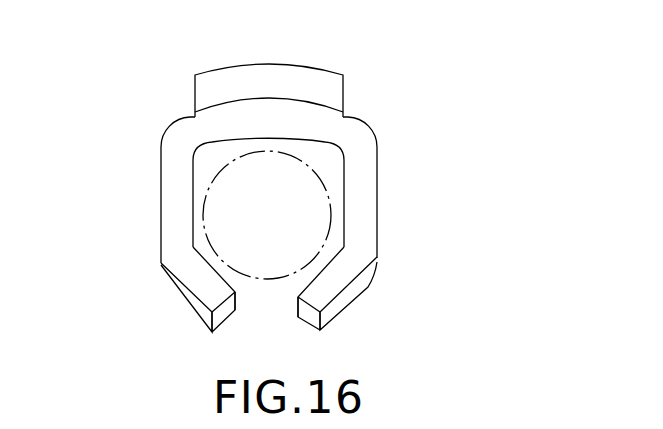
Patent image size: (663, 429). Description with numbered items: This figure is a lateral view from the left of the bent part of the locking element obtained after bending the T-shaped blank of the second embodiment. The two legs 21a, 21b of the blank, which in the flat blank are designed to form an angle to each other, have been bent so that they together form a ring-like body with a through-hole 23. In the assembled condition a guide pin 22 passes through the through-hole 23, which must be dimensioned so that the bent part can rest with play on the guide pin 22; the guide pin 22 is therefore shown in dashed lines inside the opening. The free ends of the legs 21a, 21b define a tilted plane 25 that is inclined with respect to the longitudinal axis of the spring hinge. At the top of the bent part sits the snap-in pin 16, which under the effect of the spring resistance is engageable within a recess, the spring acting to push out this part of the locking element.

The snap-in pin 16 is at (317, 88).
The leg of the T-shaped blank 21a is at (368, 177).
The leg of the T-shaped blank 21b is at (172, 172).
The guide pin 22 is at (307, 236).
The through-hole 23 is at (197, 242).
The tilted plane 25 is at (213, 315).